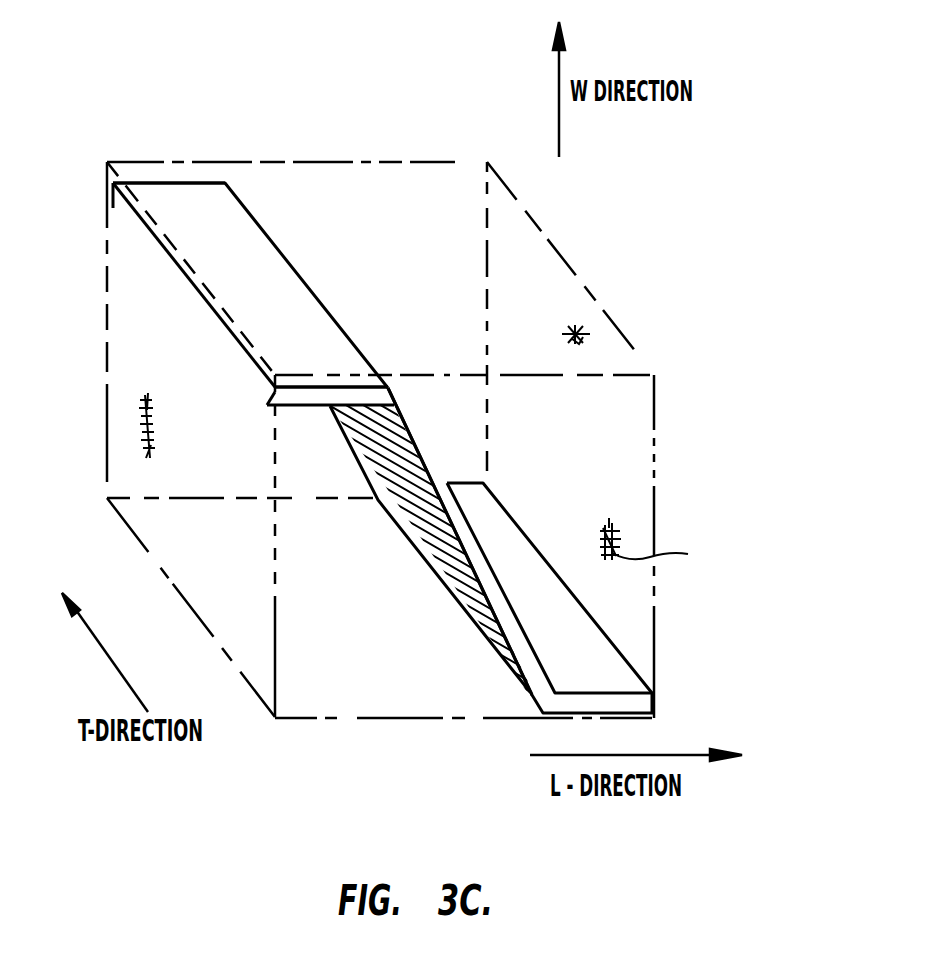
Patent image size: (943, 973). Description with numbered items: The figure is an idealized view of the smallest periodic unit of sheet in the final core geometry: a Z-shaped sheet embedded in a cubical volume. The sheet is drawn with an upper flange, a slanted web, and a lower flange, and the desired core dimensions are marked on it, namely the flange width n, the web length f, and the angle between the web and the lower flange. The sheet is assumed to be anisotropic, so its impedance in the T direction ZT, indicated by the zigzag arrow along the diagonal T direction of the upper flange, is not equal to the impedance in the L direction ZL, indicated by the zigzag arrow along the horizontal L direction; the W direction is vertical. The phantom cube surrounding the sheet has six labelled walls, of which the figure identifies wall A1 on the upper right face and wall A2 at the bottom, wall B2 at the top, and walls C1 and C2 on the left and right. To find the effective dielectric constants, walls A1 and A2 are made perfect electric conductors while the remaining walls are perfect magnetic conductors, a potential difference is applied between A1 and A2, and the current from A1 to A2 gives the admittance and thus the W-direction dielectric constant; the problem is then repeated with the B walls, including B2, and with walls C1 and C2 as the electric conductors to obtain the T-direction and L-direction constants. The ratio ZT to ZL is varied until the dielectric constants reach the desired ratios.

The cube wall A1 is at (572, 326).
The cube wall A2 is at (330, 673).
The cube wall B2 is at (381, 211).
The cube wall C1 is at (140, 430).
The cube wall C2 is at (620, 437).
The core dimension n is at (113, 85).
The core dimension f is at (408, 397).
The impedance in the T direction ZT is at (178, 208).
The impedance in the L direction ZL is at (332, 342).